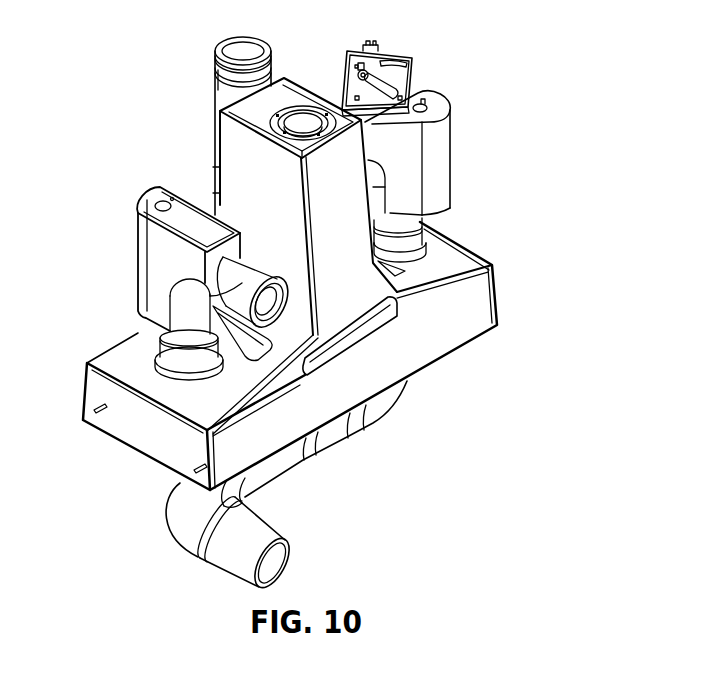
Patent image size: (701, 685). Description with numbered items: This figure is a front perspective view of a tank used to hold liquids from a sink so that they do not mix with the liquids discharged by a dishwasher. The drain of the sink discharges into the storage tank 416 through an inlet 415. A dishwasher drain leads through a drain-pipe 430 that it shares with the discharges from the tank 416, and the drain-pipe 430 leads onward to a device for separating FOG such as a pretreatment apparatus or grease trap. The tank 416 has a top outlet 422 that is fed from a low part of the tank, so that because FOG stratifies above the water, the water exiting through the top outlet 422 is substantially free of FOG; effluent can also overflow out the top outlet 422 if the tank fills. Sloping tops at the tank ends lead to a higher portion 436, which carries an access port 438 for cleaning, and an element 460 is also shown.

The inlet 415 is at (238, 288).
The storage tank 416 is at (480, 305).
The top outlet 422 is at (258, 79).
The drain-pipe 430 is at (233, 557).
The higher portion 436 is at (360, 236).
The access port 438 is at (273, 118).
The motor module 460 is at (442, 138).